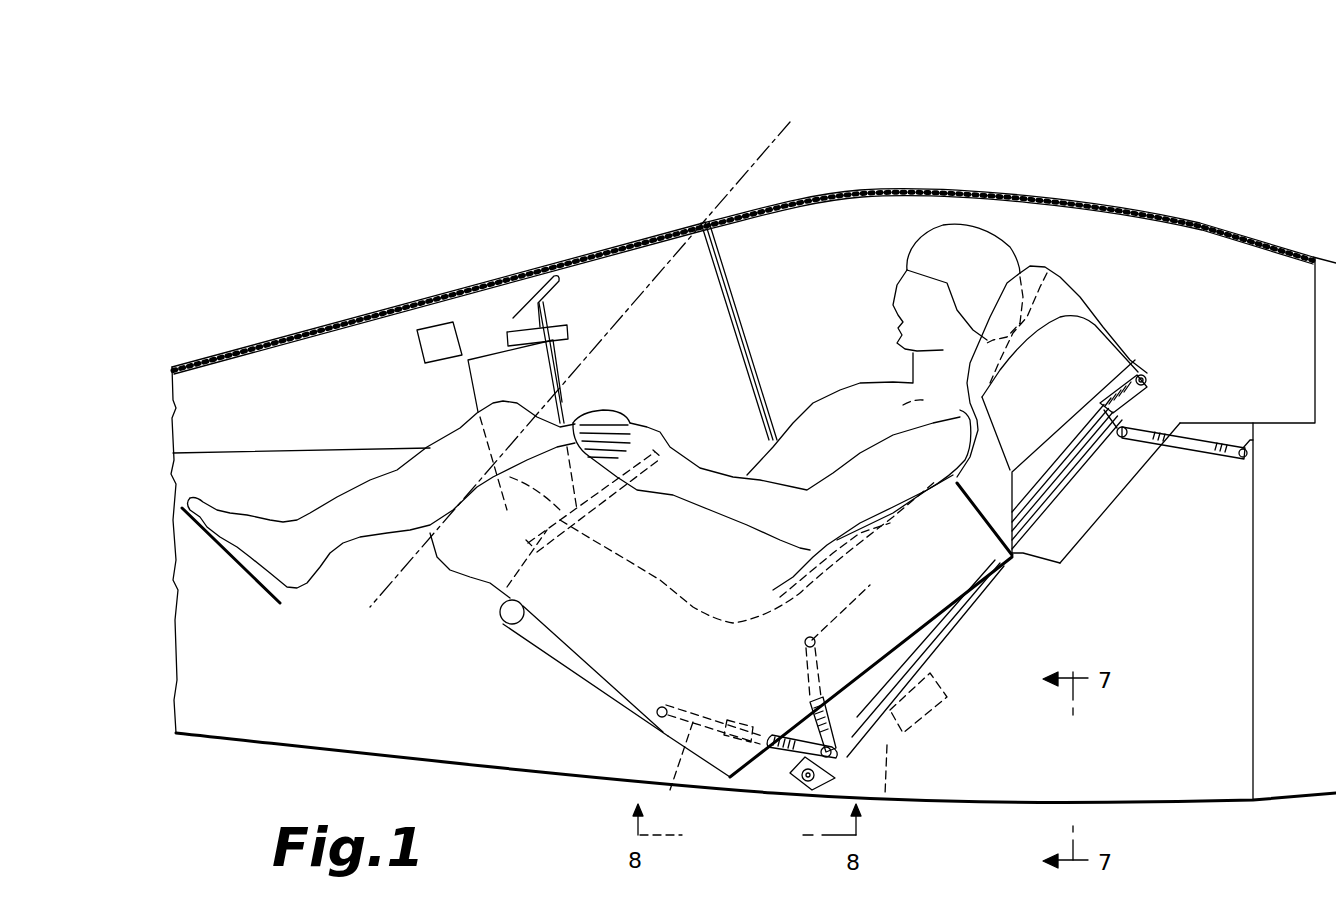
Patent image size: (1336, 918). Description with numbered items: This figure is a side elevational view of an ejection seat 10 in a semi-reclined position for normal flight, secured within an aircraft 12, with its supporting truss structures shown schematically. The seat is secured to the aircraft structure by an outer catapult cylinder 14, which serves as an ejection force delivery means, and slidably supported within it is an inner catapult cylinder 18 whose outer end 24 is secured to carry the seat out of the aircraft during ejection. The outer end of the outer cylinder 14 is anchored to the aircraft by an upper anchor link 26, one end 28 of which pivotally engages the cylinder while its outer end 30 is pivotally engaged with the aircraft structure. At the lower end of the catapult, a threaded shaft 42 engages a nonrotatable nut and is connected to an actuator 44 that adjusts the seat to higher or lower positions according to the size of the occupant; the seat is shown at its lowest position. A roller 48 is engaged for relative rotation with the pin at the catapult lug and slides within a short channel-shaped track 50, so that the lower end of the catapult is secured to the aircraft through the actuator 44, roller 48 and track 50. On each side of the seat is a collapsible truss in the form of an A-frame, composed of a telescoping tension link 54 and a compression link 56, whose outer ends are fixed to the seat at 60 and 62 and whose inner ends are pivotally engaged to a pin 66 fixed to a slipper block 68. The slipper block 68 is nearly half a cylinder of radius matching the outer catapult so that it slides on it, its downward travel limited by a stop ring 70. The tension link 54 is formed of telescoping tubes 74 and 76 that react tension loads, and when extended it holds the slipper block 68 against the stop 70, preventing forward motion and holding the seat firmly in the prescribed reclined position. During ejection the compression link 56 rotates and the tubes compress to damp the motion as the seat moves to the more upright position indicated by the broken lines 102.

The ejection seat 10 is at (565, 662).
The aircraft 12 is at (918, 178).
The outer catapult cylinder 14 is at (1037, 508).
The inner catapult cylinder 18 is at (1120, 405).
The outer end of inner catapult cylinder 24 is at (1148, 376).
The upper anchor link 26 is at (1205, 450).
The end of upper anchor link 28 is at (1108, 437).
The outer end of upper anchor link 30 is at (1240, 465).
The threaded shaft 42 is at (845, 728).
The actuator 44 is at (947, 697).
The roller 48 is at (796, 797).
The channel-shaped track 50 is at (838, 748).
The telescoping tension link 54 is at (710, 708).
The compression link 56 is at (822, 658).
The fixed point of tension link 60 is at (655, 702).
The fixed point of compression link 62 is at (854, 601).
The pin 66 is at (828, 757).
The slipper block 68 is at (855, 778).
The stop ring 70 is at (862, 796).
The telescoping tube 74 is at (783, 723).
The telescoping tube 76 is at (674, 768).
The broken lines 102 is at (658, 278).